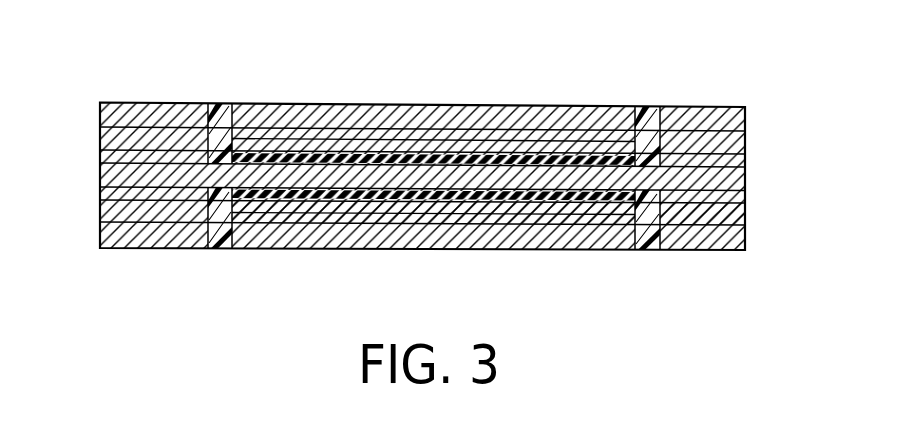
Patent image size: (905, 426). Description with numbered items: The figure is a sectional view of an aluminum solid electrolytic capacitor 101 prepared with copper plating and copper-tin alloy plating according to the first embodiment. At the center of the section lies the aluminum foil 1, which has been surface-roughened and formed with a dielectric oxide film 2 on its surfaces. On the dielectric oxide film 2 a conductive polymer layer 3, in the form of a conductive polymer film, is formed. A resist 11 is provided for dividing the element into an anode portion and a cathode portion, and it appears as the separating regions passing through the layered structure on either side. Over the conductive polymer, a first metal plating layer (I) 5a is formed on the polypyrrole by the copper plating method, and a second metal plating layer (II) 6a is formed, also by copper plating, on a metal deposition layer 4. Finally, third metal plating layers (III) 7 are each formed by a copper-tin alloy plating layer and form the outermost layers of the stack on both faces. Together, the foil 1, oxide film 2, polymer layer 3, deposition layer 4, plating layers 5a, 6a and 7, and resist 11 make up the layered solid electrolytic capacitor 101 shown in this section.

The solid electrolytic capacitor 101 is at (427, 85).
The aluminum foil 1 is at (100, 177).
The dielectric oxide film 2 is at (322, 194).
The conductive polymer layer 3 is at (435, 213).
The metal deposition layer 4 is at (725, 211).
The first metal plating layer (I) 5a is at (549, 226).
The second metal plating layer (II) 6a is at (733, 143).
The third metal plating layer (III) 7 is at (163, 103).
The resist 11 is at (222, 103).